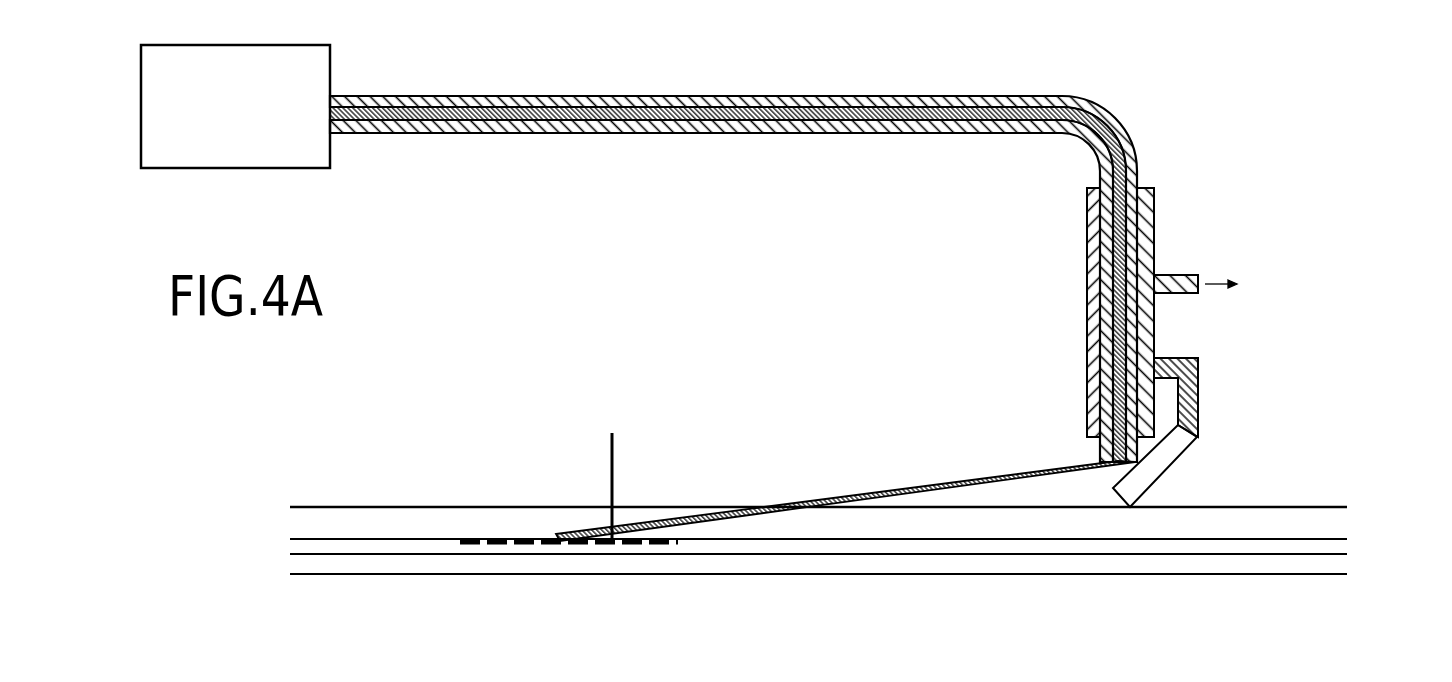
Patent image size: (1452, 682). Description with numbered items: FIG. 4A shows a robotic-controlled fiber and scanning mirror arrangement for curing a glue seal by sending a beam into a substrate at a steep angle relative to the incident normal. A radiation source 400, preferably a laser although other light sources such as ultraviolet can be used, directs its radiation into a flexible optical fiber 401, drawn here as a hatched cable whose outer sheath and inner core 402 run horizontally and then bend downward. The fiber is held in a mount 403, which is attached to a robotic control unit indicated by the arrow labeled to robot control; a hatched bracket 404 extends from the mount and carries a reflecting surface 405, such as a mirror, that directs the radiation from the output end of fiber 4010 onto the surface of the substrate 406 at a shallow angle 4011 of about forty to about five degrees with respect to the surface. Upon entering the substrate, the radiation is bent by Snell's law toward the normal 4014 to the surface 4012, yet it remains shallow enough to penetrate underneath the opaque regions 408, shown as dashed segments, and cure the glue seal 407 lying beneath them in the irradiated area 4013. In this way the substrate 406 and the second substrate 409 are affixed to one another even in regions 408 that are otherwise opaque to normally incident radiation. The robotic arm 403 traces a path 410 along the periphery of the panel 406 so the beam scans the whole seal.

The radiation source 400 is at (332, 53).
The flexible optical fiber 401 is at (500, 95).
The optical fiber core 402 is at (652, 97).
The mount 403 is at (1160, 262).
The mirror bracket 404 is at (1203, 378).
The reflecting surface 405 is at (1193, 438).
The substrate 406 is at (1335, 523).
The glue seal 407 is at (290, 540).
The opaque regions 408 is at (527, 538).
The substrate 409 is at (558, 565).
The output end of fiber 4010 is at (1098, 458).
The shallow angle 4011 is at (957, 500).
The substrate surface 4012 is at (698, 505).
The irradiated region 4013 is at (543, 557).
The normal 4014 is at (619, 462).
The path 410 is at (1244, 678).